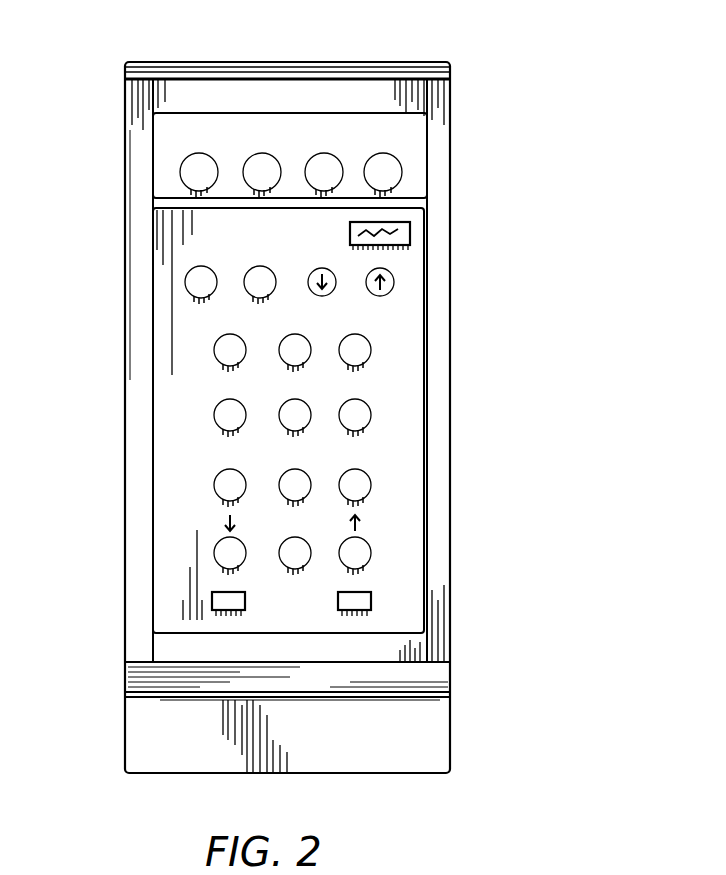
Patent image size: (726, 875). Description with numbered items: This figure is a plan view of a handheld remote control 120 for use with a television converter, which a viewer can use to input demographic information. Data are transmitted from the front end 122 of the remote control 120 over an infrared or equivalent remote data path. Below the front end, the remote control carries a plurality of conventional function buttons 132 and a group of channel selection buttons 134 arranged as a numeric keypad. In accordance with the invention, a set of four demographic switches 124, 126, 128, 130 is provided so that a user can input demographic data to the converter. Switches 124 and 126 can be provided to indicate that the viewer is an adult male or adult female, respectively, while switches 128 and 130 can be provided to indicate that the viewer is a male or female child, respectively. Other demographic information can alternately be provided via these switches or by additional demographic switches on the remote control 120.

The remote control 120 is at (120, 386).
The front end 122 is at (397, 70).
The switch 124 is at (180, 168).
The switch 126 is at (265, 153).
The switch 128 is at (314, 155).
The switch 130 is at (401, 172).
The function buttons 132 is at (402, 262).
The channel selection buttons 134 is at (384, 476).